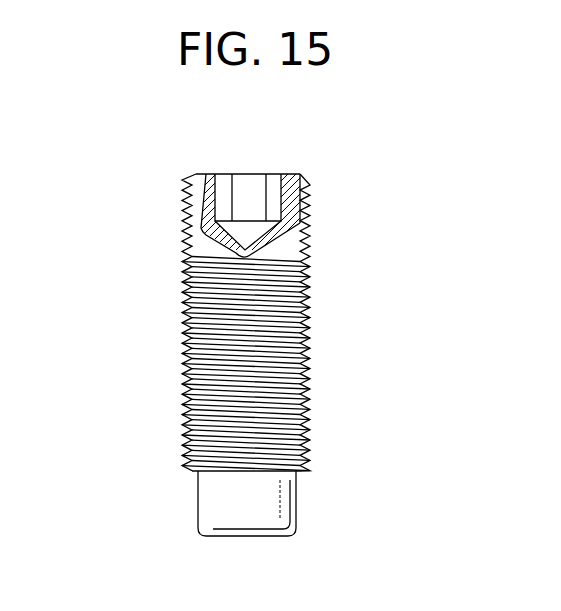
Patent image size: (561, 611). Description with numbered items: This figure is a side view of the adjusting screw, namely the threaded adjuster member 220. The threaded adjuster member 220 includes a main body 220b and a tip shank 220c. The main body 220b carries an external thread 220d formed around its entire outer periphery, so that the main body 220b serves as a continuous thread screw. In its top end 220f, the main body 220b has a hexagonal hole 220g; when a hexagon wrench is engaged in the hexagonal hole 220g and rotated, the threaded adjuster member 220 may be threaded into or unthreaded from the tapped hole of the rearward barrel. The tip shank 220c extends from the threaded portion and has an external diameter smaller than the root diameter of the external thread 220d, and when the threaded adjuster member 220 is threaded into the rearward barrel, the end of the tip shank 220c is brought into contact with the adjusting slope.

The threaded adjuster member 220 is at (343, 260).
The main body 220b is at (270, 355).
The tip shank 220c is at (265, 503).
The external thread 220d is at (183, 304).
The top end 220f is at (292, 174).
The hexagonal hole 220g is at (247, 197).